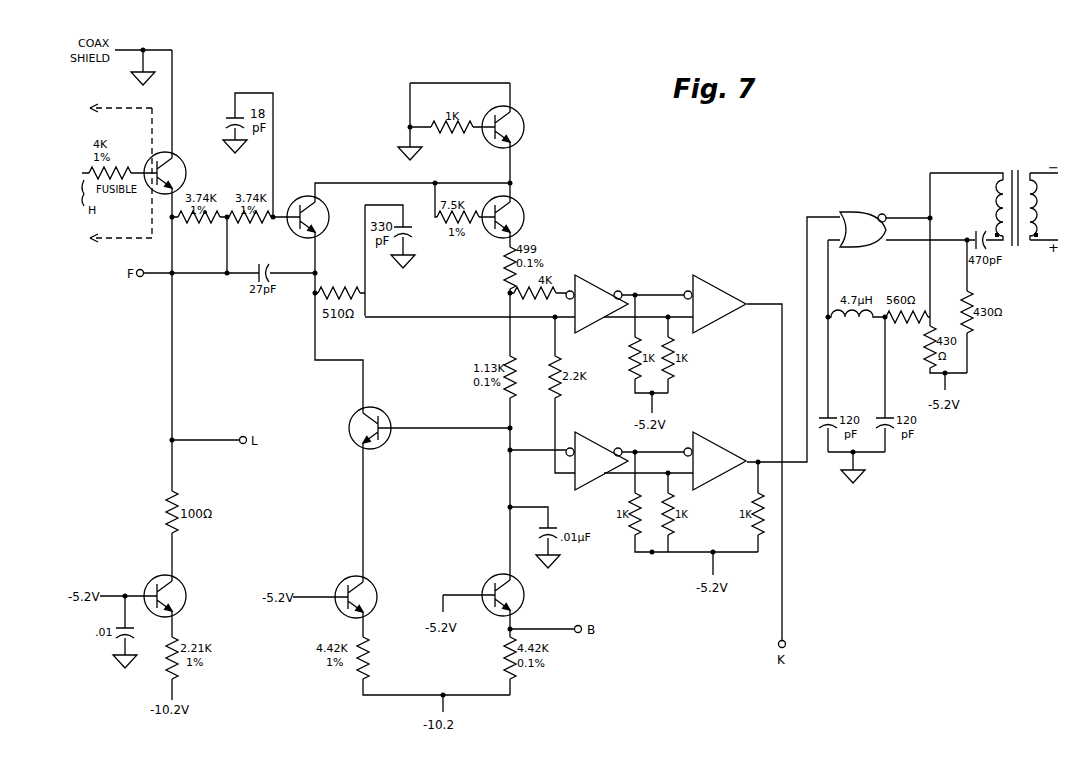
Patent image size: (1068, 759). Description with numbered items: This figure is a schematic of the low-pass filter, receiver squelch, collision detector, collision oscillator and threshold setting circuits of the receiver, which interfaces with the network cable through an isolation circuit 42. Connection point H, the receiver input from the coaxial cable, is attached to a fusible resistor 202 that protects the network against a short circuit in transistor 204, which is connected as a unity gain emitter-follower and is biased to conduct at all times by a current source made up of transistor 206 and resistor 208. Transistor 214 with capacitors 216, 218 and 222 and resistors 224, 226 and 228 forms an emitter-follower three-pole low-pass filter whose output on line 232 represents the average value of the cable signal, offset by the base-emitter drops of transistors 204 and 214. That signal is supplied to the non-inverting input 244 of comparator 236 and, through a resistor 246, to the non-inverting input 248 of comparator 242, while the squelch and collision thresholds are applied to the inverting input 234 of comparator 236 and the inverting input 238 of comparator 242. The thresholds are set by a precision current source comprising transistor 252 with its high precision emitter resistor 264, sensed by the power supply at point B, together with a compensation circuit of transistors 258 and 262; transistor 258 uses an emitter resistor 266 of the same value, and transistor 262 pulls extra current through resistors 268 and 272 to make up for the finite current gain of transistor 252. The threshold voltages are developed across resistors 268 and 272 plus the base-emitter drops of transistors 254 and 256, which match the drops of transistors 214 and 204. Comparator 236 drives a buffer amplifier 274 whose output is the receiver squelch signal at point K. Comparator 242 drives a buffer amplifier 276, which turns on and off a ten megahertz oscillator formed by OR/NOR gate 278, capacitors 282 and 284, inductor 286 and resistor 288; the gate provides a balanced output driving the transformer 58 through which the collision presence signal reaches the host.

The isolation circuit 42 is at (128, 224).
The transformer 58 is at (1016, 163).
The fusible resistor 202 is at (113, 172).
The transistor 204 is at (153, 192).
The transistor 206 is at (182, 590).
The resistor 208 is at (162, 668).
The transistor 214 is at (300, 196).
The capacitor 216 is at (242, 116).
The capacitor 218 is at (266, 263).
The capacitor 222 is at (412, 234).
The resistor 224 is at (199, 228).
The resistor 226 is at (268, 226).
The resistor 228 is at (334, 290).
The line 232 is at (423, 316).
The inverting input 234 is at (570, 290).
The comparator 236 is at (642, 284).
The inverting input 238 is at (568, 448).
The comparator 242 is at (612, 448).
The non-inverting input 244 is at (568, 322).
The resistor 246 is at (552, 372).
The non-inverting input 248 is at (554, 480).
The transistor 252 is at (527, 596).
The transistor 254 is at (520, 212).
The transistor 256 is at (520, 118).
The transistor 258 is at (372, 600).
The transistor 262 is at (348, 420).
The resistor 264 is at (498, 658).
The resistor 266 is at (370, 656).
The resistor 268 is at (522, 468).
The resistor 272 is at (504, 266).
The buffer amplifier 274 is at (716, 284).
The buffer amplifier 276 is at (716, 442).
The OR/NOR gate 278 is at (848, 210).
The capacitor 282 is at (836, 412).
The capacitor 284 is at (893, 412).
The inductor 286 is at (855, 321).
The resistor 288 is at (912, 322).